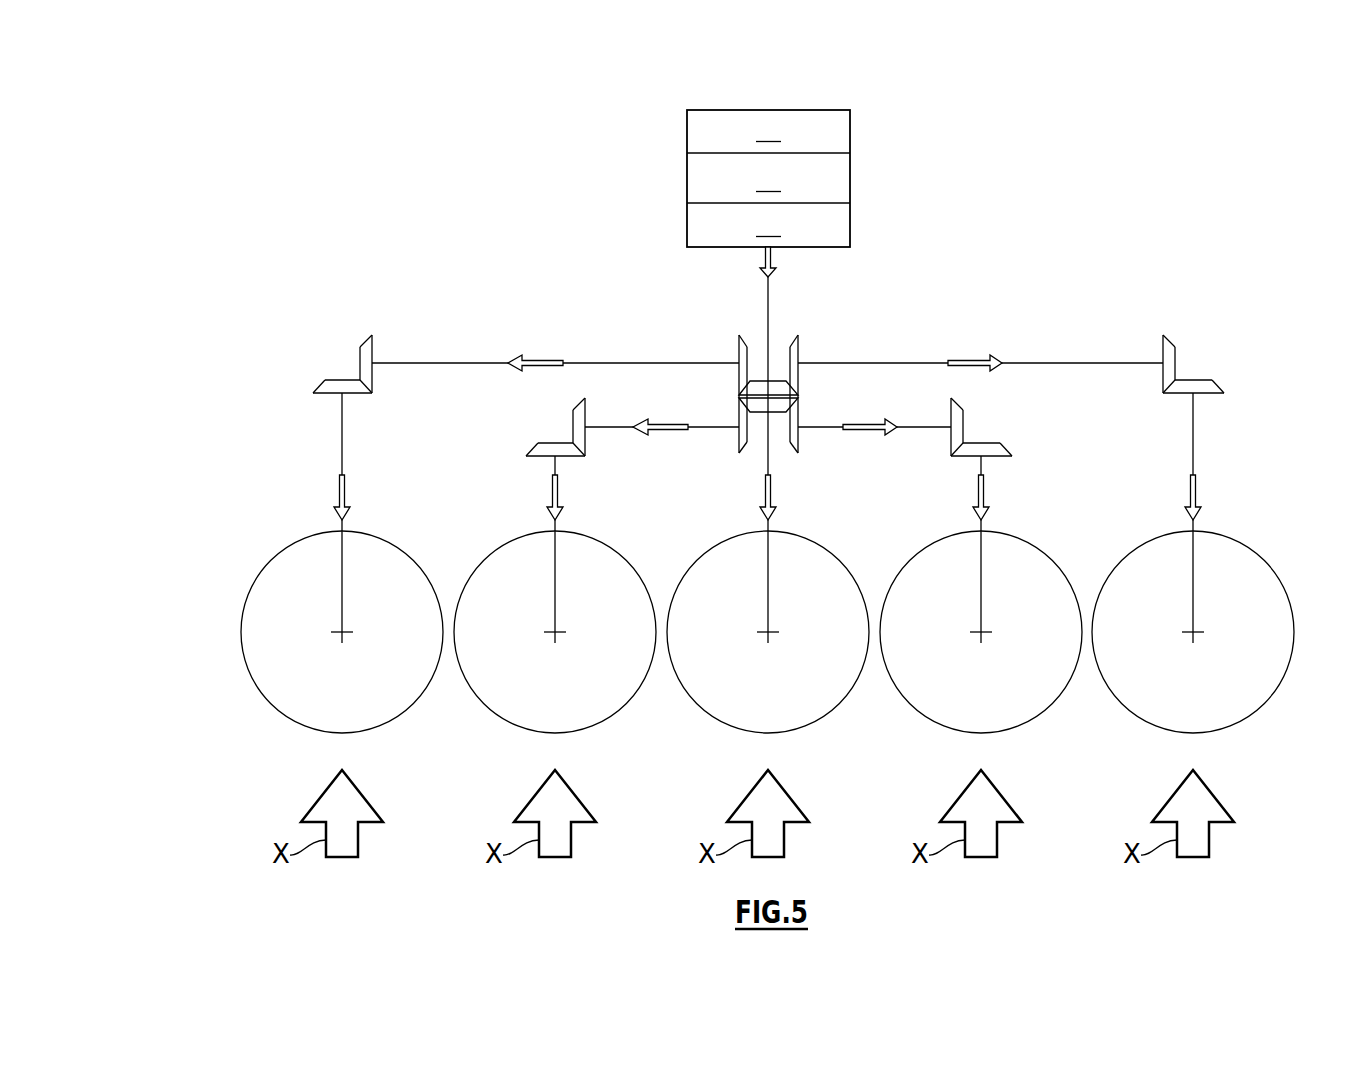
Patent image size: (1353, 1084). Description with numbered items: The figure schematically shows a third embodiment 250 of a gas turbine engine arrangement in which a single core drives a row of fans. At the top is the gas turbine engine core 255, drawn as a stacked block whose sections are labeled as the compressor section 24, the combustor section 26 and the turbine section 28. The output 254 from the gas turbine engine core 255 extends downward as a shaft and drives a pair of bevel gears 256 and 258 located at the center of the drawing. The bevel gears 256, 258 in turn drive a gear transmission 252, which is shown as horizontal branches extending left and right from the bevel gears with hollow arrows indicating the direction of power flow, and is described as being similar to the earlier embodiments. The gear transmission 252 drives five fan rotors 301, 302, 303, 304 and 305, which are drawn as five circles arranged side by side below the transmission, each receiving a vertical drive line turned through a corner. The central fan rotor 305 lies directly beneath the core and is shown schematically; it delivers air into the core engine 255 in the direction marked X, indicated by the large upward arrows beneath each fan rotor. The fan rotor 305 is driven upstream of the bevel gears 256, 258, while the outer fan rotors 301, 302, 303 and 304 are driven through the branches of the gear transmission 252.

The embodiment 250 is at (726, 421).
The gear transmission 252 is at (481, 322).
The output 254 is at (768, 302).
The gas turbine engine core 255 is at (800, 178).
The bevel gear 256 is at (757, 385).
The bevel gear 258 is at (760, 410).
The compressor section 24 is at (768, 224).
The combustor section 26 is at (768, 179).
The turbine section 28 is at (768, 129).
The fan rotor 301 is at (262, 605).
The fan rotor 302 is at (500, 697).
The fan rotor 303 is at (931, 560).
The fan rotor 304 is at (1143, 560).
The fan rotor 305 is at (805, 710).